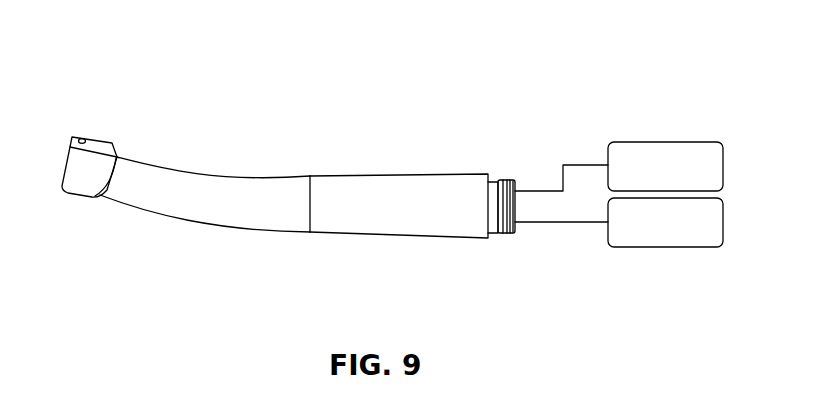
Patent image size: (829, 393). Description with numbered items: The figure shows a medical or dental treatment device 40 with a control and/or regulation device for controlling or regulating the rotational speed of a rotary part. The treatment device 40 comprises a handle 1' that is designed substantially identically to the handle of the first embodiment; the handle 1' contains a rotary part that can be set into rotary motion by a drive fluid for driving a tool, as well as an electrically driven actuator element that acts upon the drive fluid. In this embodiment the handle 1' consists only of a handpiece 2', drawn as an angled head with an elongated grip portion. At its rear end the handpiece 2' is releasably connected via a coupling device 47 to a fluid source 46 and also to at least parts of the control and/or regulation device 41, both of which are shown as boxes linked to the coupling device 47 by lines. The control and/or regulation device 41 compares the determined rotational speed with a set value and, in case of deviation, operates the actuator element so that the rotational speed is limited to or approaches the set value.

The handle 1' is at (304, 188).
The handpiece 2' is at (294, 226).
The medical or dental treatment device 40 is at (392, 163).
The control and/or regulation device 41 is at (683, 181).
The fluid source 46 is at (683, 238).
The coupling device 47 is at (503, 250).